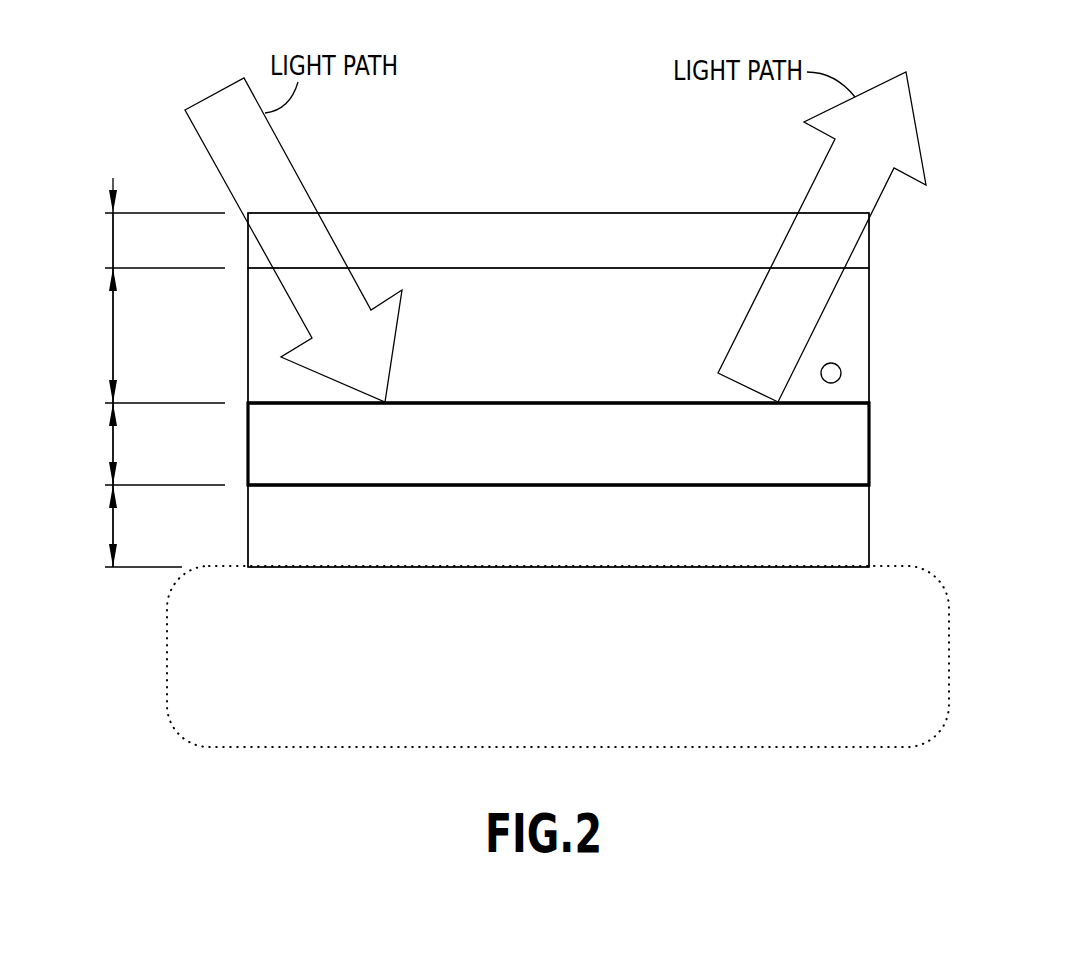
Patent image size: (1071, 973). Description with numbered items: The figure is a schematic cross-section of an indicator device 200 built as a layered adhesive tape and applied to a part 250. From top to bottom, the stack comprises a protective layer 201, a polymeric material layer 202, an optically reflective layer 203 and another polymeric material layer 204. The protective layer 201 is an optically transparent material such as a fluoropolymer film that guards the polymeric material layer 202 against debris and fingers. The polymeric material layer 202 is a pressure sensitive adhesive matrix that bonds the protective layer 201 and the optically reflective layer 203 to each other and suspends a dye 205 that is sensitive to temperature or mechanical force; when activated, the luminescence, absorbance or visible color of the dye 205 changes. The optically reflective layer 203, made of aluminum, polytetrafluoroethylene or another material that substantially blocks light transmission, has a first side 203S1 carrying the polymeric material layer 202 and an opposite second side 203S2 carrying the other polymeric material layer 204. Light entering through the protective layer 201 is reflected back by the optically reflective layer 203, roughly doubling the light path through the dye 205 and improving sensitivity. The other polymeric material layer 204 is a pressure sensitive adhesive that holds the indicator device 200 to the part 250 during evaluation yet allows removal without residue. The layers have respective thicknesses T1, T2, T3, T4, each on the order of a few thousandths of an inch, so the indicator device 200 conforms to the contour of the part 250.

The indicator device 200 is at (548, 72).
The protective layer 201 is at (463, 212).
The polymeric material layer 202 is at (851, 338).
The optically reflective layer 203 is at (853, 433).
The first side 203S1 is at (657, 403).
The second side 203S2 is at (770, 487).
The other polymeric material layer 204 is at (853, 540).
The dye 205 is at (840, 378).
The part 250 is at (168, 704).
The thickness T1 is at (113, 240).
The thickness T2 is at (113, 333).
The thickness T3 is at (113, 442).
The thickness T4 is at (113, 523).